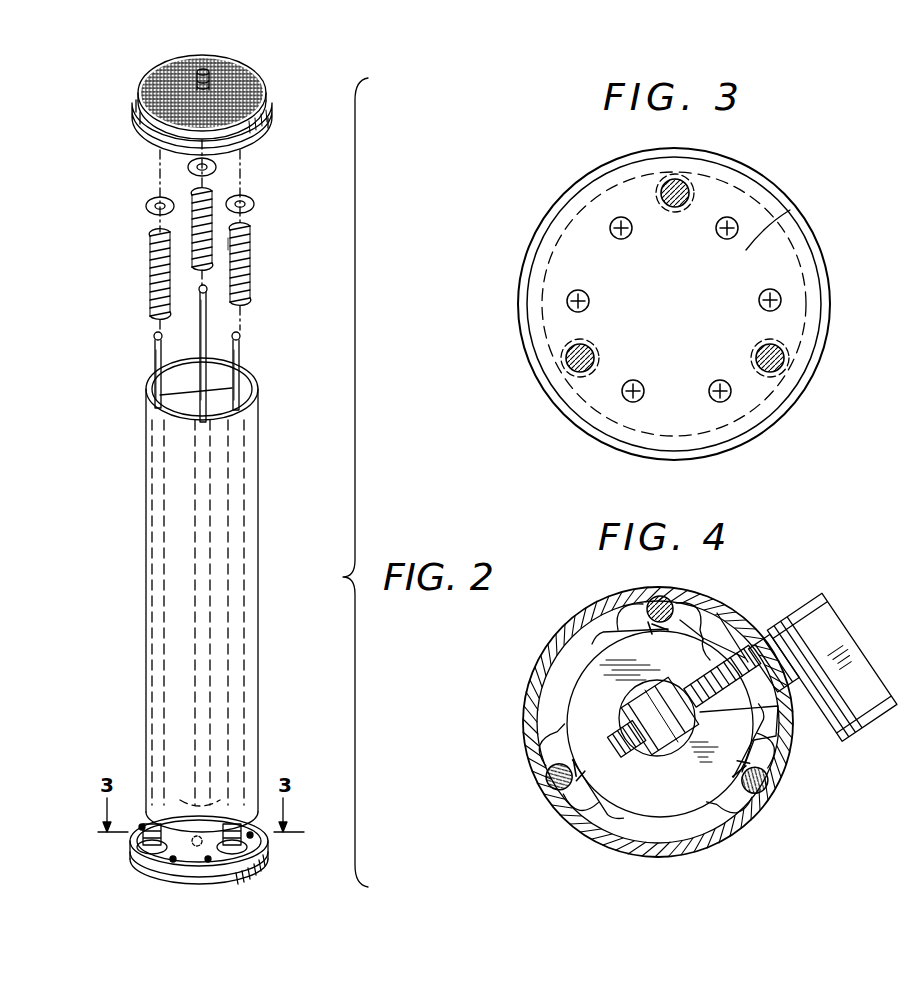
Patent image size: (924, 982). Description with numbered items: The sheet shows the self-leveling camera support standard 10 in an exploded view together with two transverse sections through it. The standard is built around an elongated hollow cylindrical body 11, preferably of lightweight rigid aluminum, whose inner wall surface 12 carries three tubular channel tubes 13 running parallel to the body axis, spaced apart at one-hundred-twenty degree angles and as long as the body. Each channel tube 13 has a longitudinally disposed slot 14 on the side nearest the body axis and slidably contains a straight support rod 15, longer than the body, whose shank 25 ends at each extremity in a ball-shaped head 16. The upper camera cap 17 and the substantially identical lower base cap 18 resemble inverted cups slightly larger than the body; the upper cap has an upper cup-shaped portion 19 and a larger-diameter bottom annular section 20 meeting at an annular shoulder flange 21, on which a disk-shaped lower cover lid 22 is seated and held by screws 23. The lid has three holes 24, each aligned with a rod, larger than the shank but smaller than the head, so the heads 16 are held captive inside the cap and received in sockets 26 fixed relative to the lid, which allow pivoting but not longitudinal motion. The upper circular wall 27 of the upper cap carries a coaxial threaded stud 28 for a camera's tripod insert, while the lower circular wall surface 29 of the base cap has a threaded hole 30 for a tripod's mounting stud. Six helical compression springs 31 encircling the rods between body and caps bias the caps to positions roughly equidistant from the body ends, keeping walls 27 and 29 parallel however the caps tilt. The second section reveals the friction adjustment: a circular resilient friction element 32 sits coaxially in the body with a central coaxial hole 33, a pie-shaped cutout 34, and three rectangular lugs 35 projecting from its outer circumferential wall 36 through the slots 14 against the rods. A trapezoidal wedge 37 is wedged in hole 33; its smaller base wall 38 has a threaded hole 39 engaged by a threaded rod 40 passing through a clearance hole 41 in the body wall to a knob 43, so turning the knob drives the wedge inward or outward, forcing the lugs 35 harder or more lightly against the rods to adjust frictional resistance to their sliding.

In FIG. 2, the camera support standard 10 is at (292, 456).
In FIG. 2, the cylindrical body 11 is at (258, 516).
In FIG. 2, the inner wall surface 12 is at (252, 284).
In FIG. 2, the tubular channel tubes 13 is at (200, 520).
In FIG. 4, the tubular channel tubes 13 is at (625, 612).
In FIG. 2, the slot 14 is at (160, 395).
In FIG. 4, the slot 14 is at (672, 606).
In FIG. 2, the support rod 15 is at (274, 344).
In FIG. 4, the support rod 15 is at (658, 596).
In FIG. 2, the ball-shaped head 16 is at (154, 334).
In FIG. 3, the ball-shaped head 16 is at (612, 182).
In FIG. 2, the upper camera cap 17 is at (268, 93).
In FIG. 2, the lower base cap 18 is at (268, 850).
In FIG. 3, the lower base cap 18 is at (780, 185).
In FIG. 2, the upper cup-shaped portion 19 is at (138, 106).
In FIG. 2, the bottom annular section 20 is at (142, 128).
In FIG. 3, the bottom annular section 20 is at (808, 236).
In FIG. 2, the annular shoulder flange 21 is at (268, 128).
In FIG. 3, the annular shoulder flange 21 is at (808, 350).
In FIG. 2, the lower cover lid 22 is at (250, 145).
In FIG. 3, the lower cover lid 22 is at (748, 250).
In FIG. 3, the screws 23 is at (611, 222).
In FIG. 3, the holes 24 is at (664, 186).
In FIG. 2, the shank 25 is at (274, 366).
In FIG. 3, the shank 25 is at (684, 190).
In FIG. 3, the sockets 26 is at (672, 178).
In FIG. 2, the upper circular wall 27 is at (218, 80).
In FIG. 2, the threaded stud 28 is at (180, 85).
In FIG. 2, the lower circular wall surface 29 is at (150, 876).
In FIG. 2, the threaded hole 30 is at (258, 884).
In FIG. 2, the helical compression springs 31 is at (150, 252).
In FIG. 4, the friction element 32 is at (712, 830).
In FIG. 4, the central coaxial hole 33 is at (735, 795).
In FIG. 4, the pie-shaped cutout 34 is at (725, 656).
In FIG. 4, the lugs 35 is at (652, 628).
In FIG. 4, the outer circumferential wall 36 is at (622, 838).
In FIG. 4, the wedge 37 is at (628, 708).
In FIG. 4, the smaller base wall 38 is at (704, 738).
In FIG. 4, the threaded hole 39 is at (676, 760).
In FIG. 4, the threaded rod 40 is at (776, 686).
In FIG. 4, the clearance hole 41 is at (762, 646).
In FIG. 4, the knob 43 is at (868, 692).